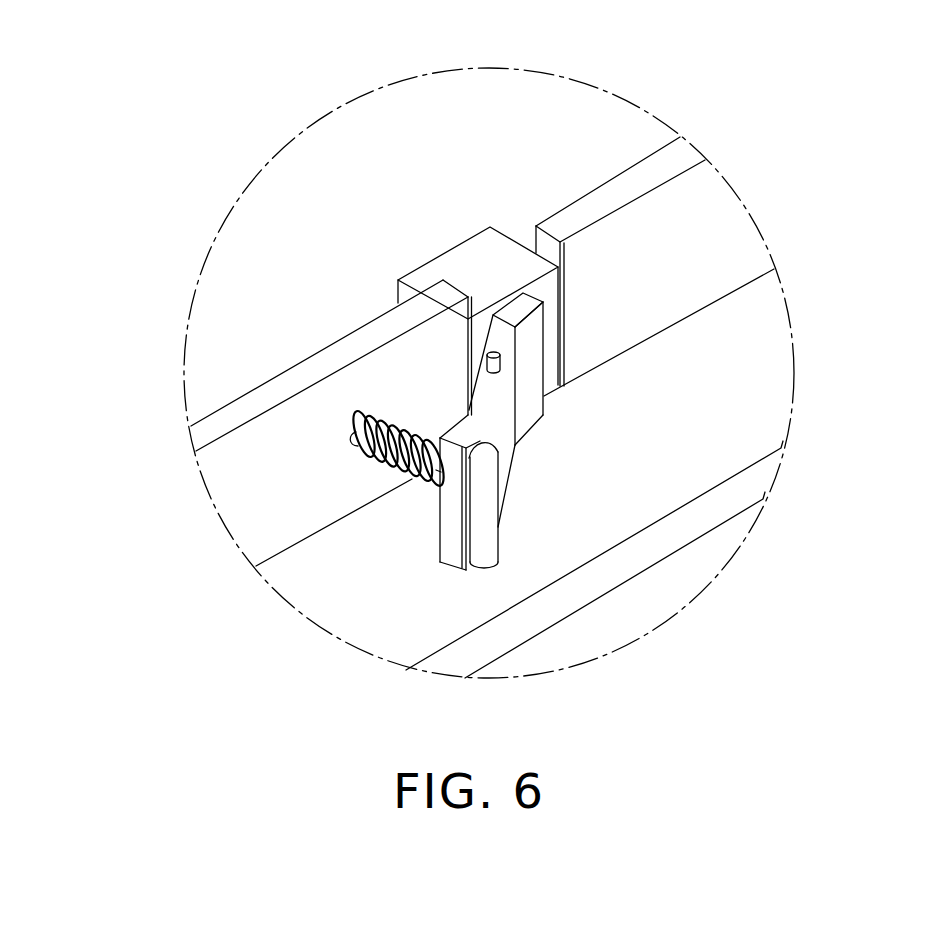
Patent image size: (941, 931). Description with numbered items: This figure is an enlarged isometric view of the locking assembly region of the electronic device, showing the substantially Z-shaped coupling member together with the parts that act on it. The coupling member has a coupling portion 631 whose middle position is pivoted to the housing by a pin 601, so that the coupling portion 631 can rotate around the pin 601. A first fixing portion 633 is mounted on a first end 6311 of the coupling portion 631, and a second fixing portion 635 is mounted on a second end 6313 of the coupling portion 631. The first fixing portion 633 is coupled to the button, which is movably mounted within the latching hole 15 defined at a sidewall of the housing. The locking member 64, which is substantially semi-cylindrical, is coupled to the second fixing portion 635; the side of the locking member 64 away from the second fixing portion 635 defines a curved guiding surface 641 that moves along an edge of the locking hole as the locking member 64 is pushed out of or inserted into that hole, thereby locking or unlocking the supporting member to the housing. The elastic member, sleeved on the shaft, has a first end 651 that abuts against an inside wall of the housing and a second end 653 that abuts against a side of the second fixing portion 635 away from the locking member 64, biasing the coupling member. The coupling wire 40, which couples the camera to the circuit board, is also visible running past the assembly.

The latching hole 15 is at (512, 227).
The first fixing portion 633 is at (523, 308).
The coupling portion 631 is at (490, 393).
The first end 6311 is at (505, 335).
The second end 6313 is at (483, 415).
The pin 601 is at (490, 353).
The second fixing portion 635 is at (465, 433).
The first end 651 is at (353, 438).
The second end 653 is at (437, 483).
The locking member 64 is at (463, 510).
The guiding surface 641 is at (482, 533).
The coupling wire 40 is at (680, 532).